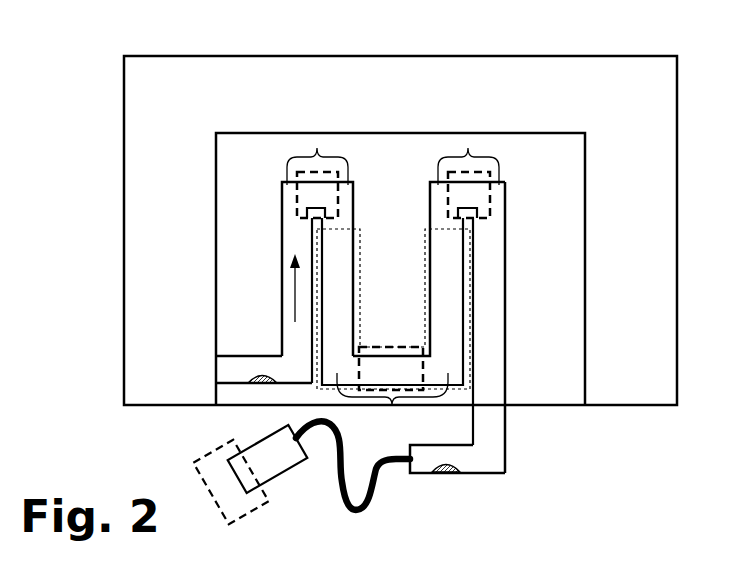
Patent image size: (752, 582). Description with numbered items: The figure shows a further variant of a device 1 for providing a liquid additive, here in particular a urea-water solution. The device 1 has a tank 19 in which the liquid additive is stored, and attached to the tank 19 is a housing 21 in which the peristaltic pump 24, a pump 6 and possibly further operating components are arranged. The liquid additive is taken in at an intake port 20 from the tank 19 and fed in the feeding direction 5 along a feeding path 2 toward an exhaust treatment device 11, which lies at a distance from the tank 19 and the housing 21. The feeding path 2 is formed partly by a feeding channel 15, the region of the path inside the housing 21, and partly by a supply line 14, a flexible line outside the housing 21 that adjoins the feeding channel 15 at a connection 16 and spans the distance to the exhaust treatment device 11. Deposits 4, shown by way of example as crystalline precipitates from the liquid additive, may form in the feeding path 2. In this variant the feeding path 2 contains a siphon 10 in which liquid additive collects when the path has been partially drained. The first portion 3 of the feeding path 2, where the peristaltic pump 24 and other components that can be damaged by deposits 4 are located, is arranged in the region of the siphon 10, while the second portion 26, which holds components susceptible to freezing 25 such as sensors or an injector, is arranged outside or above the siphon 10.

The device 1 is at (117, 54).
The feeding path 2 is at (505, 355).
The first portion 3 is at (392, 405).
The deposit 4 is at (252, 379).
The feeding direction 5 is at (282, 303).
The pump 6 is at (373, 342).
The siphon 10 is at (287, 477).
The exhaust treatment device 11 is at (243, 518).
The supply line 14 is at (400, 490).
The feeding channel 15 is at (505, 340).
The connection 16 is at (413, 473).
The tank 19 is at (123, 173).
The intake port 20 is at (213, 362).
The housing 21 is at (216, 273).
The peristaltic pump 24 is at (403, 345).
The component susceptible to freezing 25 is at (297, 173).
The second portion 26 is at (317, 148).